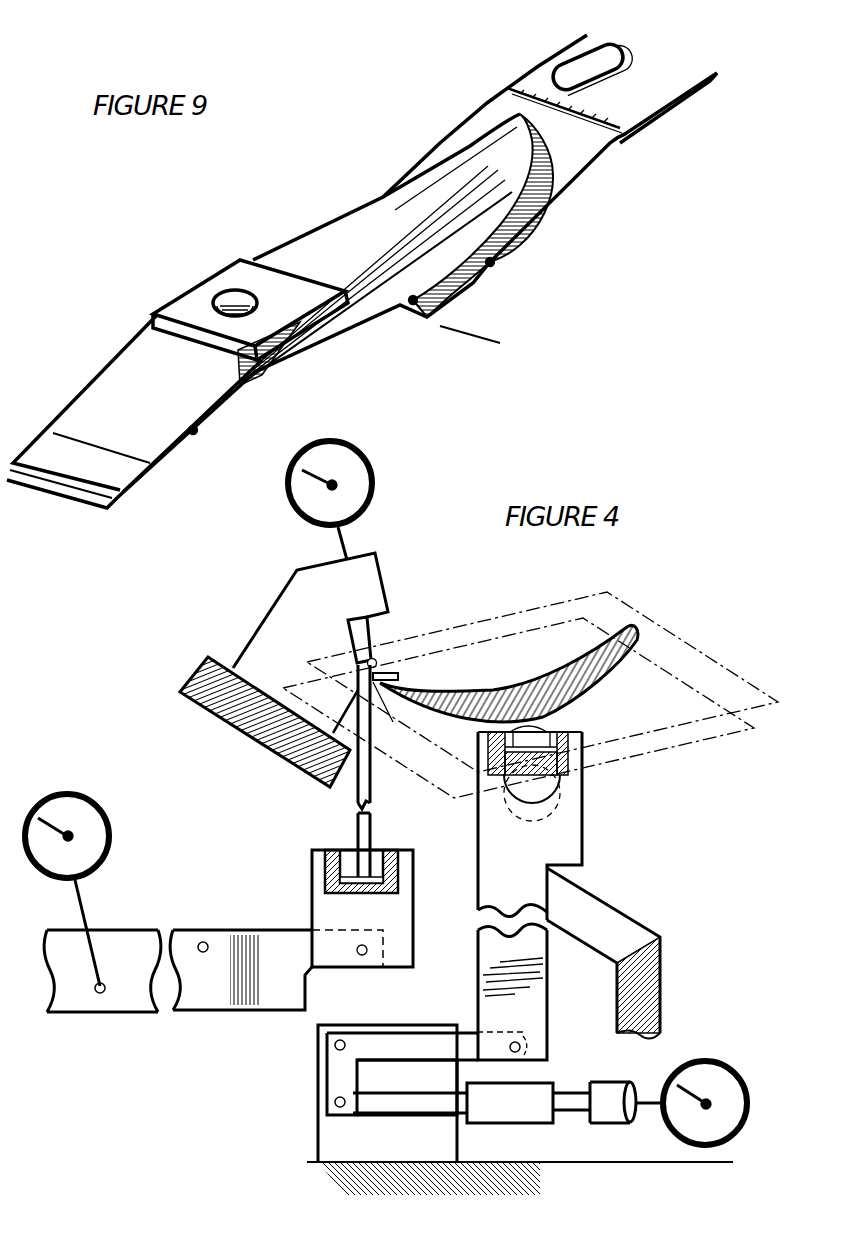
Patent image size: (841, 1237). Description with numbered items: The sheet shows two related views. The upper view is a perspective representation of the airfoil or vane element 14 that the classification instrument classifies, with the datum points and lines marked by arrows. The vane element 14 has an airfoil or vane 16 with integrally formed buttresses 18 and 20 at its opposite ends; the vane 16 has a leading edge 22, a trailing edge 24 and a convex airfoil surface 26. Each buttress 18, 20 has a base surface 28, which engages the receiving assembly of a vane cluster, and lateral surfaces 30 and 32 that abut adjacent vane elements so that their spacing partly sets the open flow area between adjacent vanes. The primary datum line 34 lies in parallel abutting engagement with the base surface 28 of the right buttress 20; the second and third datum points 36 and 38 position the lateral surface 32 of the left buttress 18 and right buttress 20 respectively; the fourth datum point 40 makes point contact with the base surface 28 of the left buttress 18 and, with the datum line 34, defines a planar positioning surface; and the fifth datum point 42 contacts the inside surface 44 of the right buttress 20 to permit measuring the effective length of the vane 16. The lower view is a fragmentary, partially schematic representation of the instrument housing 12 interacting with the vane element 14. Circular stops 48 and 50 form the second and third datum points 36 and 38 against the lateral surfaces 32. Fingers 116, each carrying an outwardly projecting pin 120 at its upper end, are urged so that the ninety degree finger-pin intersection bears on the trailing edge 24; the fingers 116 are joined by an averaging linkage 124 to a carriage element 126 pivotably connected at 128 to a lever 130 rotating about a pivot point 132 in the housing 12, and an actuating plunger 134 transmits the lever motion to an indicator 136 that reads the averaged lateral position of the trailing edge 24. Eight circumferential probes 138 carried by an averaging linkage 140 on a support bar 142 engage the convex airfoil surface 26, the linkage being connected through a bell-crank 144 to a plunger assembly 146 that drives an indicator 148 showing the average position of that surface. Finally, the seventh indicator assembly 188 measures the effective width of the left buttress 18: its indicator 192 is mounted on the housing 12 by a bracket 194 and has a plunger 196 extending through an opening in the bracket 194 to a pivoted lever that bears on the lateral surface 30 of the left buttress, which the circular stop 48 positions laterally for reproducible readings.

In FIG. 4, the housing 12 is at (270, 742).
In FIG. 9, the vane element 14 is at (534, 58).
In FIG. 4, the vane element 14 is at (673, 648).
In FIG. 9, the airfoil or vane 16 is at (310, 243).
In FIG. 9, the left buttress 18 is at (147, 343).
In FIG. 9, the right buttress 20 is at (487, 106).
In FIG. 9, the leading edge 22 is at (383, 197).
In FIG. 4, the trailing edge 24 is at (376, 700).
In FIG. 9, the convex airfoil surface 26 is at (401, 258).
In FIG. 9, the base surface 28 is at (410, 313).
In FIG. 9, the lateral surface 30 is at (447, 138).
In FIG. 9, the lateral surface 32 is at (557, 200).
In FIG. 9, the primary datum line 34 is at (472, 348).
In FIG. 9, the second datum point 36 is at (193, 430).
In FIG. 9, the third datum point 38 is at (499, 265).
In FIG. 9, the fourth datum point 40 is at (96, 493).
In FIG. 9, the fifth datum point 42 is at (406, 306).
In FIG. 9, the inside surface 44 is at (572, 157).
In FIG. 4, the circular stop 48 is at (567, 780).
In FIG. 4, the circular stop 50 is at (577, 810).
In FIG. 4, the fingers 116 is at (350, 797).
In FIG. 4, the pin 120 is at (399, 676).
In FIG. 4, the averaging linkage 124 is at (316, 858).
In FIG. 4, the carriage element 126 is at (322, 906).
In FIG. 4, the pivot connection 128 is at (366, 954).
In FIG. 4, the lever 130 is at (200, 1000).
In FIG. 4, the pivot point 132 is at (203, 942).
In FIG. 4, the actuating plunger 134 is at (85, 896).
In FIG. 4, the indicator 136 is at (71, 792).
In FIG. 4, the circumferential probes 138 is at (517, 713).
In FIG. 4, the averaging linkage 140 is at (574, 753).
In FIG. 4, the post 142 is at (568, 848).
In FIG. 4, the bell-crank 144 is at (465, 1038).
In FIG. 4, the plunger assembly 146 is at (512, 1122).
In FIG. 4, the indicator 148 is at (707, 1058).
In FIG. 4, the seventh indicator assembly 188 is at (379, 623).
In FIG. 4, the indicator 192 is at (376, 480).
In FIG. 4, the bracket 194 is at (307, 594).
In FIG. 4, the plunger 196 is at (380, 627).